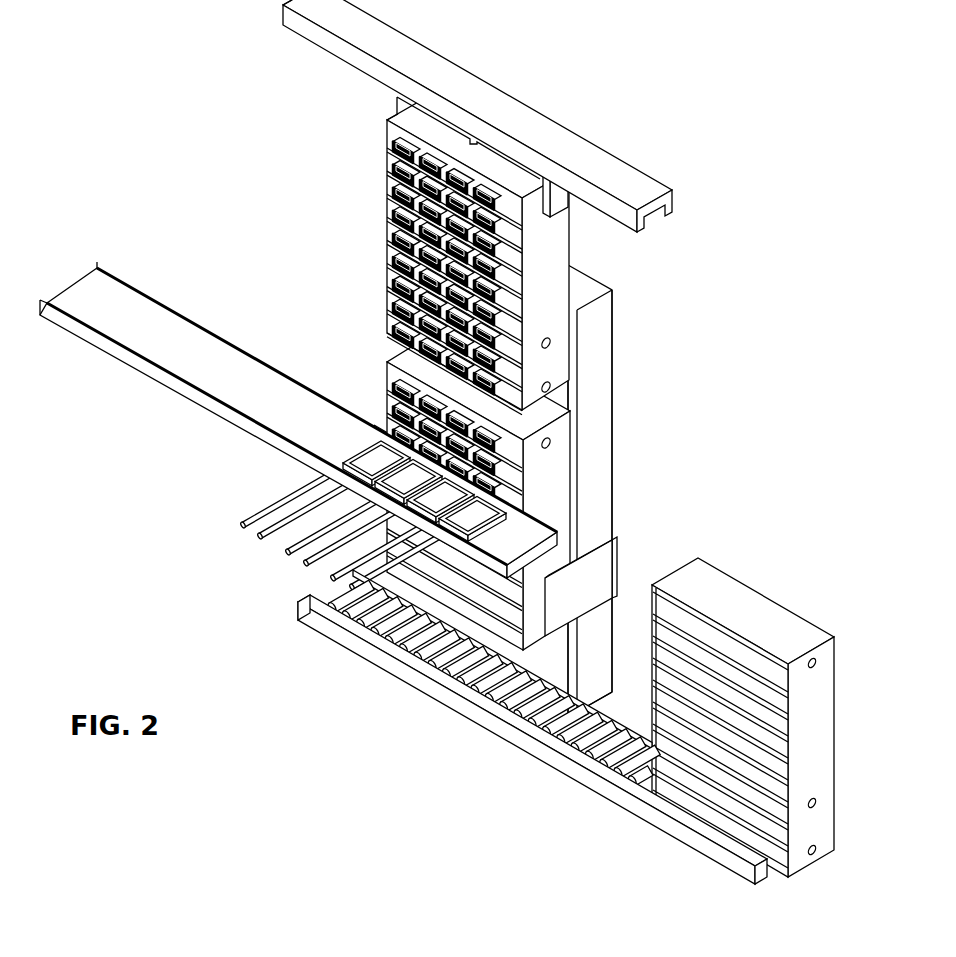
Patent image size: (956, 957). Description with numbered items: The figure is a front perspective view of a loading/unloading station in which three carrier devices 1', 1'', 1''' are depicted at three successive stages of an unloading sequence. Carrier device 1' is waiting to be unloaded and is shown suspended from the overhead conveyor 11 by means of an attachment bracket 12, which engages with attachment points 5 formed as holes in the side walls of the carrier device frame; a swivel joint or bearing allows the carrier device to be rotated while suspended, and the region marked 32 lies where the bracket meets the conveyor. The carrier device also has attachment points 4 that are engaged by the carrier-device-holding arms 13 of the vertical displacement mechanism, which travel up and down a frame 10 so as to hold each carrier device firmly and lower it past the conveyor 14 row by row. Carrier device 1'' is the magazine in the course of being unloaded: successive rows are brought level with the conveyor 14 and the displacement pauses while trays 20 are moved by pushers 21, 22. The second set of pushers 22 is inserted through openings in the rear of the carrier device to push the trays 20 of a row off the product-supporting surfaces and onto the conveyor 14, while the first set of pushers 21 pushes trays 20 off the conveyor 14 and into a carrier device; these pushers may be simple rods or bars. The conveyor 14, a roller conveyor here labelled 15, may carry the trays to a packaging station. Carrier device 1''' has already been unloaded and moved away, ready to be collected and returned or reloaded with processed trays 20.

The carrier device 1' is at (438, 254).
The carrier device 1'' is at (438, 482).
The carrier device 1''' is at (743, 700).
The attachment points 4 is at (556, 388).
The attachment points 5 is at (556, 443).
The frame 10 is at (612, 336).
The overhead conveyor 11 is at (637, 180).
The attachment bracket 12 is at (557, 203).
The carrier-device-holding arms 13 is at (595, 580).
The conveyor 14 is at (143, 330).
The roller conveyor 15 is at (485, 665).
The trays 20 is at (392, 476).
The first set of pushers 21 is at (300, 510).
The second set of pushers 22 is at (383, 433).
The hook notch 32 is at (472, 141).